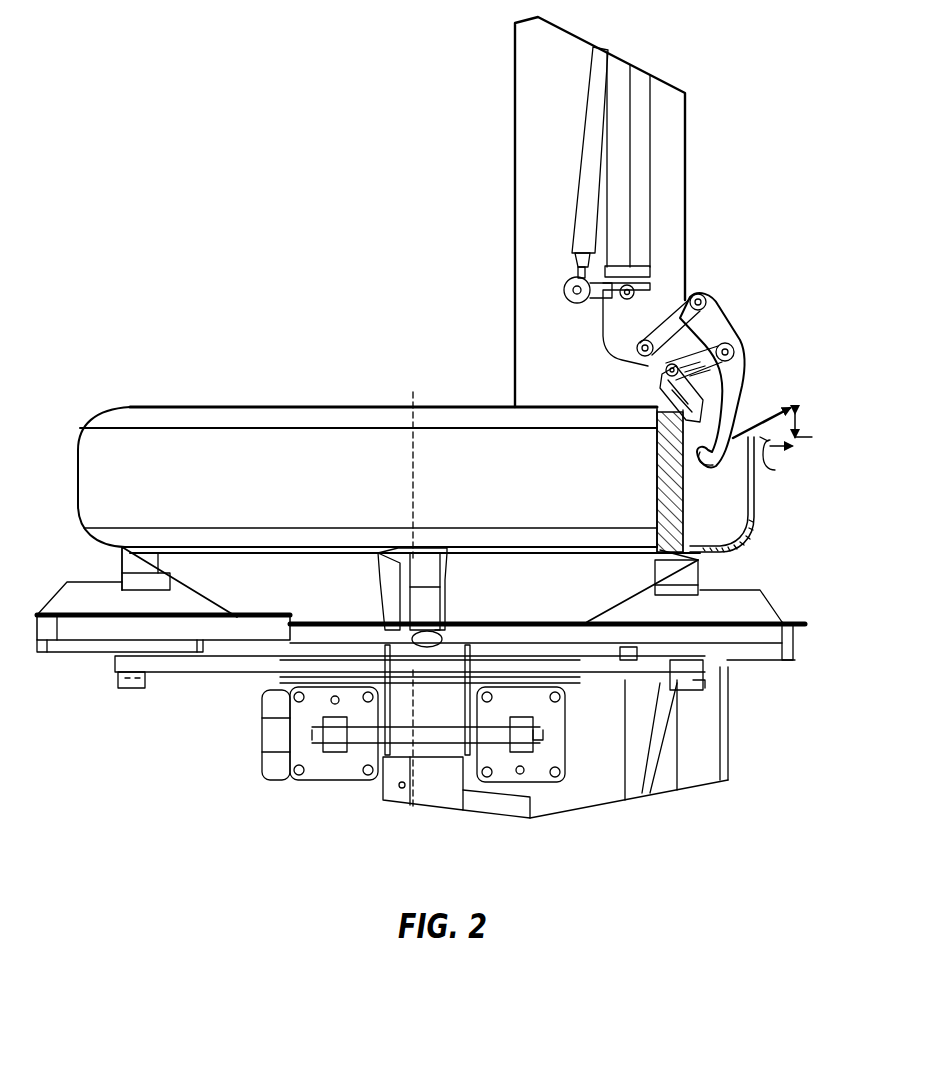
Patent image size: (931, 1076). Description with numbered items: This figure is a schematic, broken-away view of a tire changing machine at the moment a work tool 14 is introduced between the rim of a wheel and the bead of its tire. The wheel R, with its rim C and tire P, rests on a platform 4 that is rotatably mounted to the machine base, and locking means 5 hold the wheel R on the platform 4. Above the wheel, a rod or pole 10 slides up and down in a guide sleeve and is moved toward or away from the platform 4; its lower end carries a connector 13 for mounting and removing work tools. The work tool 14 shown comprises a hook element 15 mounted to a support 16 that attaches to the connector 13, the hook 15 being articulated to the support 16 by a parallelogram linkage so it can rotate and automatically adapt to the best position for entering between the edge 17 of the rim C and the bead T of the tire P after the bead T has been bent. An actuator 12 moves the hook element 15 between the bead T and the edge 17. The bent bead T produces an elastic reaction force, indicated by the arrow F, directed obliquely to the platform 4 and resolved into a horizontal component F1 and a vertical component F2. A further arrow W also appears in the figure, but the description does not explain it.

The platform 4 is at (250, 630).
The locking means 5 is at (173, 600).
The rod (pole) 10 is at (636, 236).
The actuator 12 is at (593, 190).
The connector 13 is at (600, 306).
The work tool 14 is at (745, 305).
The hook element 15 is at (660, 448).
The support 16 is at (652, 306).
The edge 17 is at (640, 418).
The wheel R is at (304, 463).
The rim C is at (657, 498).
The tire P is at (745, 523).
The bead T is at (700, 468).
The direction W is at (742, 425).
The arrow (elastic reaction force) F is at (760, 412).
The horizontal component F1 is at (789, 469).
The vertical component F2 is at (826, 426).